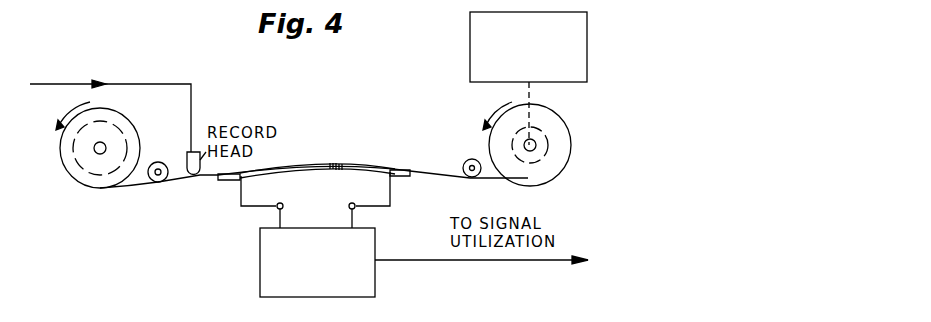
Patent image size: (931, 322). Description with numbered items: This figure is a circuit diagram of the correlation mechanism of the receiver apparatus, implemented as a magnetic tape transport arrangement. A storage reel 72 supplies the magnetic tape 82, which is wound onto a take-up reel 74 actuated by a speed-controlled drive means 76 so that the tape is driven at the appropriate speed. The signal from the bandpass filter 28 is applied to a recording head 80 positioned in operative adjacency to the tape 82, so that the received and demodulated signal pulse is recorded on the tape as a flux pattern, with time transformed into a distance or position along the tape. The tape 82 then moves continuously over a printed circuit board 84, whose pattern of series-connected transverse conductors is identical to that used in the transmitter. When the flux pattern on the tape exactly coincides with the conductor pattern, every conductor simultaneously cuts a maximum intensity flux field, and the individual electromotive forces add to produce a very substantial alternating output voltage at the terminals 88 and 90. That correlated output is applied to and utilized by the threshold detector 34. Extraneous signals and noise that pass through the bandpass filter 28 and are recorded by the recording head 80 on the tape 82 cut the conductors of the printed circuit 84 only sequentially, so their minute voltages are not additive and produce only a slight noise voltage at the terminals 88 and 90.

The bandpass filter 28 is at (83, 50).
The storage reel 72 is at (128, 119).
The recording head 80 is at (187, 153).
The magnetic tape 82 is at (181, 180).
The printed circuit board 84 is at (349, 173).
The terminal 88 is at (262, 202).
The terminal 90 is at (355, 198).
The threshold detector 34 is at (375, 240).
The speed-controlled drive means 76 is at (587, 40).
The take-up reel 74 is at (568, 111).